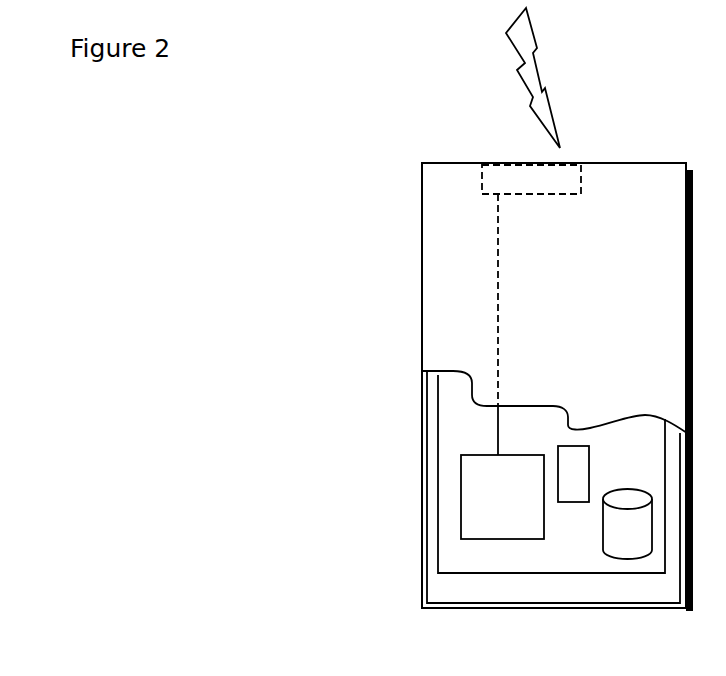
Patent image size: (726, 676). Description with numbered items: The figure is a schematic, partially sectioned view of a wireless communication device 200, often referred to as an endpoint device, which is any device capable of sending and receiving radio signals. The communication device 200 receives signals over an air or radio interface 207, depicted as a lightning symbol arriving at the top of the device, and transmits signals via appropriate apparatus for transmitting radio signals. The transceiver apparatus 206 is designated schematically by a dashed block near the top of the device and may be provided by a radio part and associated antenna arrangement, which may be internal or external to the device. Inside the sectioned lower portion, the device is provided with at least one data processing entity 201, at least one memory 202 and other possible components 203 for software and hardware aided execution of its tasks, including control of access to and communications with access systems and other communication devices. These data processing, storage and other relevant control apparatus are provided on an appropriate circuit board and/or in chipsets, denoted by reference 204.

The communication device 200 is at (422, 199).
The data processing entity 201 is at (468, 483).
The memory 202 is at (622, 533).
The other possible components 203 is at (573, 458).
The circuit board and/or chipsets 204 is at (460, 557).
The transceiver apparatus 206 is at (572, 173).
The air or radio interface 207 is at (562, 98).